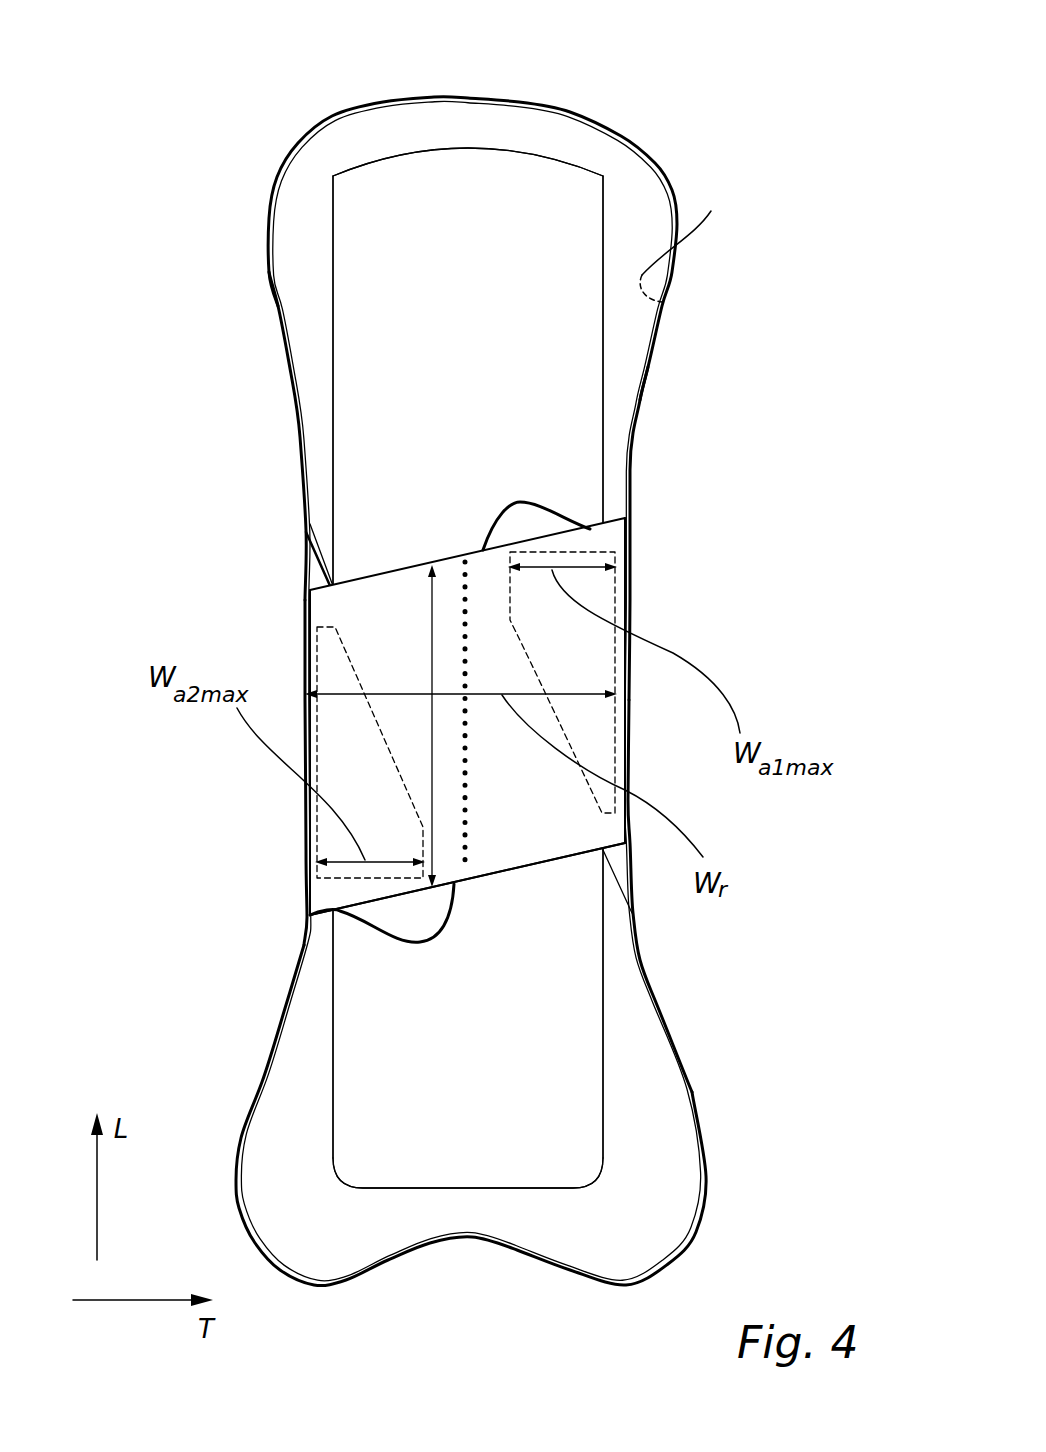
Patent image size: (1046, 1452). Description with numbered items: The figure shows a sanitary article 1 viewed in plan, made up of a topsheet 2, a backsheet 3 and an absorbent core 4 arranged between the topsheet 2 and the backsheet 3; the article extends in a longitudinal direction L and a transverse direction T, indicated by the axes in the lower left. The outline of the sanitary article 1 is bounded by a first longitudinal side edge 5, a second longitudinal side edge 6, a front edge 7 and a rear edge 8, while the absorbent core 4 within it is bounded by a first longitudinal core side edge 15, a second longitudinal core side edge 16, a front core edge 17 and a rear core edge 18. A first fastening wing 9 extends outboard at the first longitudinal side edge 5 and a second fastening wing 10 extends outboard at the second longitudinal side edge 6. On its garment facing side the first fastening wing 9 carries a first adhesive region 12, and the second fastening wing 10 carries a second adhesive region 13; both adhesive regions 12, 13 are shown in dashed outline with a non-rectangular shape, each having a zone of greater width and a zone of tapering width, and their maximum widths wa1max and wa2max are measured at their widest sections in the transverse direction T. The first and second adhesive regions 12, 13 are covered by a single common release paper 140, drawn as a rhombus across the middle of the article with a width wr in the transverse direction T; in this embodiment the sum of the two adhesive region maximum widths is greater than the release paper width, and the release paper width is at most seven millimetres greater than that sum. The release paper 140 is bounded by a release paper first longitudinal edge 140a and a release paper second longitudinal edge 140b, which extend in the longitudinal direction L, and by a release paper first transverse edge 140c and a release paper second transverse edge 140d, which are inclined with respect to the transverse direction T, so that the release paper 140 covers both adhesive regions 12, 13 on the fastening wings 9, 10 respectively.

The sanitary article 1 is at (680, 123).
The topsheet 2 is at (680, 242).
The backsheet 3 is at (662, 302).
The absorbent core 4 is at (590, 367).
The first longitudinal side edge 5 is at (637, 415).
The second longitudinal side edge 6 is at (270, 295).
The front edge 7 is at (378, 114).
The rear edge 8 is at (521, 1257).
The first fastening wing 9 is at (555, 802).
The second fastening wing 10 is at (303, 803).
The first adhesive region 12 is at (555, 630).
The second adhesive region 13 is at (338, 732).
The first longitudinal core side edge 15 is at (603, 448).
The second longitudinal core side edge 16 is at (333, 380).
The front core edge 17 is at (519, 150).
The rear core edge 18 is at (431, 1188).
The release paper 140 is at (630, 850).
The release paper first longitudinal edge 140a is at (630, 605).
The release paper second longitudinal edge 140b is at (303, 713).
The release paper first transverse edge 140c is at (465, 552).
The release paper second transverse edge 140d is at (502, 875).